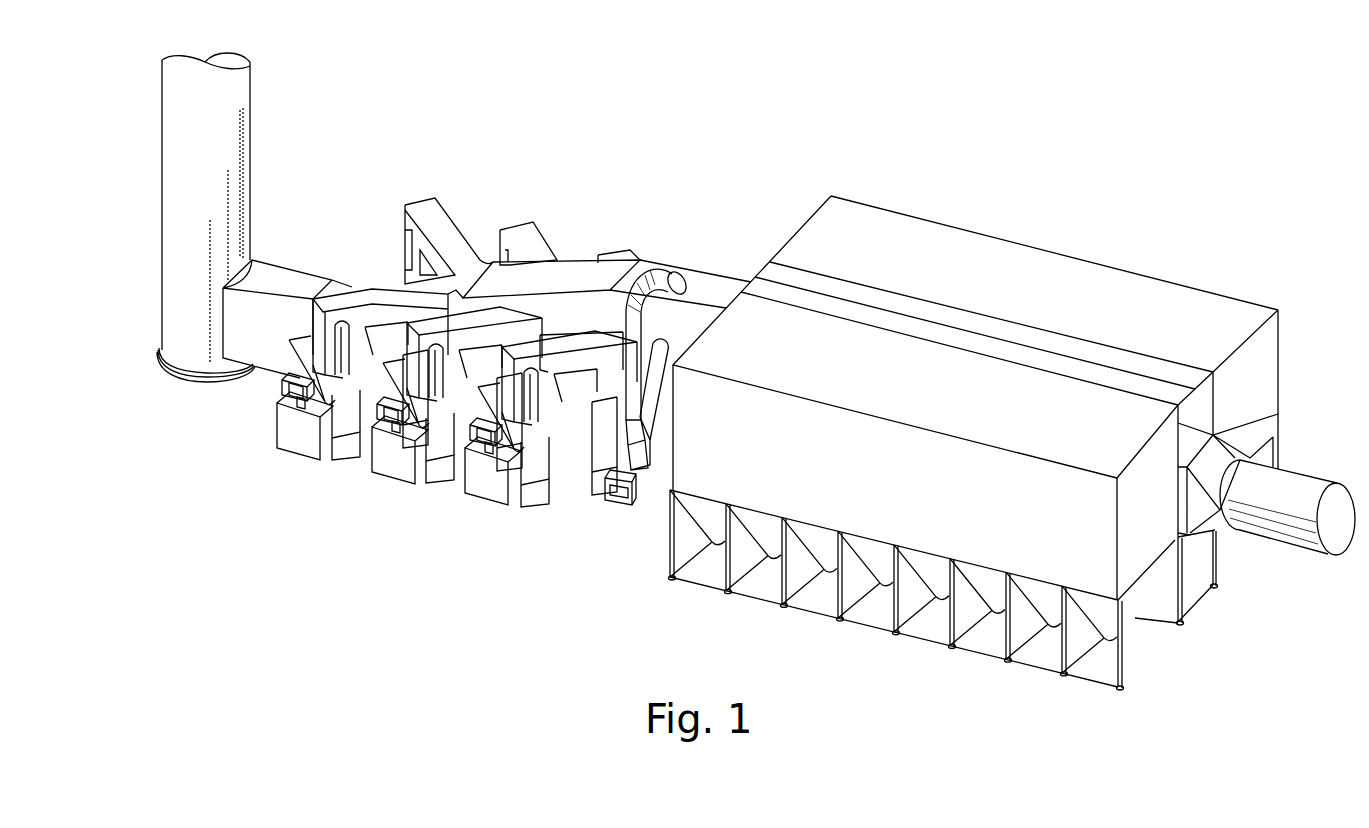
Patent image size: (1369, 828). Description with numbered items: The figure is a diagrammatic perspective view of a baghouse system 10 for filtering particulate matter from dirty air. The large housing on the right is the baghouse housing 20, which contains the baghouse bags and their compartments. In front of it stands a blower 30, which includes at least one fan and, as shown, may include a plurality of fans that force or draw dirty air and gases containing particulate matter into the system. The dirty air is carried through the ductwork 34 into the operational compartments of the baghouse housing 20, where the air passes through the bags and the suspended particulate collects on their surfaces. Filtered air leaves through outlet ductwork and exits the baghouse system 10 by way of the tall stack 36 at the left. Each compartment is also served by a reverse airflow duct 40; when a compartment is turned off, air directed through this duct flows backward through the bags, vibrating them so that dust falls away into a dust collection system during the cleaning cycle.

The baghouse system 10 is at (1108, 184).
The baghouse housing 20 is at (1262, 353).
The blower 30 is at (302, 447).
The ductwork 34 is at (1192, 443).
The stack 36 is at (237, 118).
The reverse airflow duct 40 is at (677, 273).